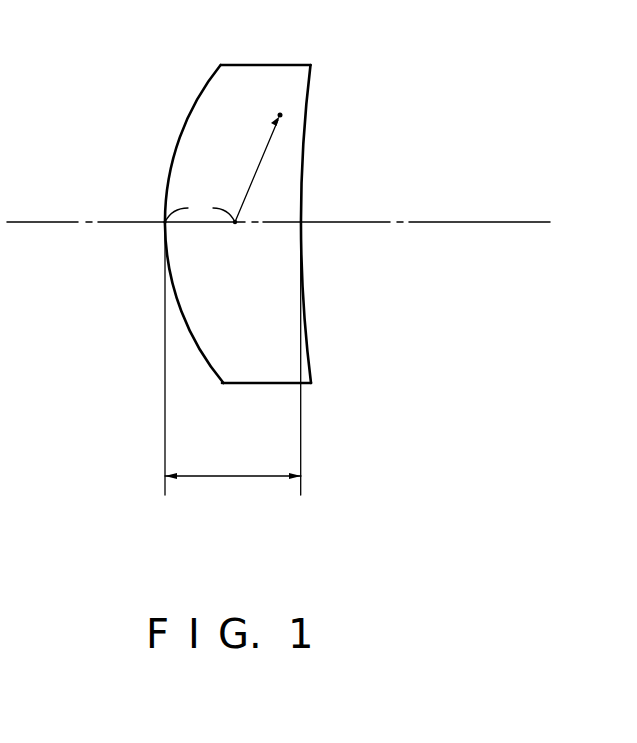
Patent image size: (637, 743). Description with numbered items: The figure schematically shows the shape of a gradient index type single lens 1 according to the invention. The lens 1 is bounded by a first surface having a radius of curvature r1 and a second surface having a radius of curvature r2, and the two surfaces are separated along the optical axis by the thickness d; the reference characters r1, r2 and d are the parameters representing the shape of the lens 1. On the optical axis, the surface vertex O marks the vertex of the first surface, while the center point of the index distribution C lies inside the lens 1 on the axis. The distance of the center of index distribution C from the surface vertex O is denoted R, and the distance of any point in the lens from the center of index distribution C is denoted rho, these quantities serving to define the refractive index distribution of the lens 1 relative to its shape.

The gradient index type single lens 1 is at (245, 196).
The radius of curvature of the first surface r1 is at (178, 143).
The radius of curvature of the second surface r2 is at (304, 130).
The lens thickness d is at (233, 365).
The surface vertex O is at (163, 224).
The center point of the index distribution C is at (235, 225).
The distance of the index distribution center from the surface vertex R is at (200, 208).
The distance from the center of index distribution rho is at (235, 222).